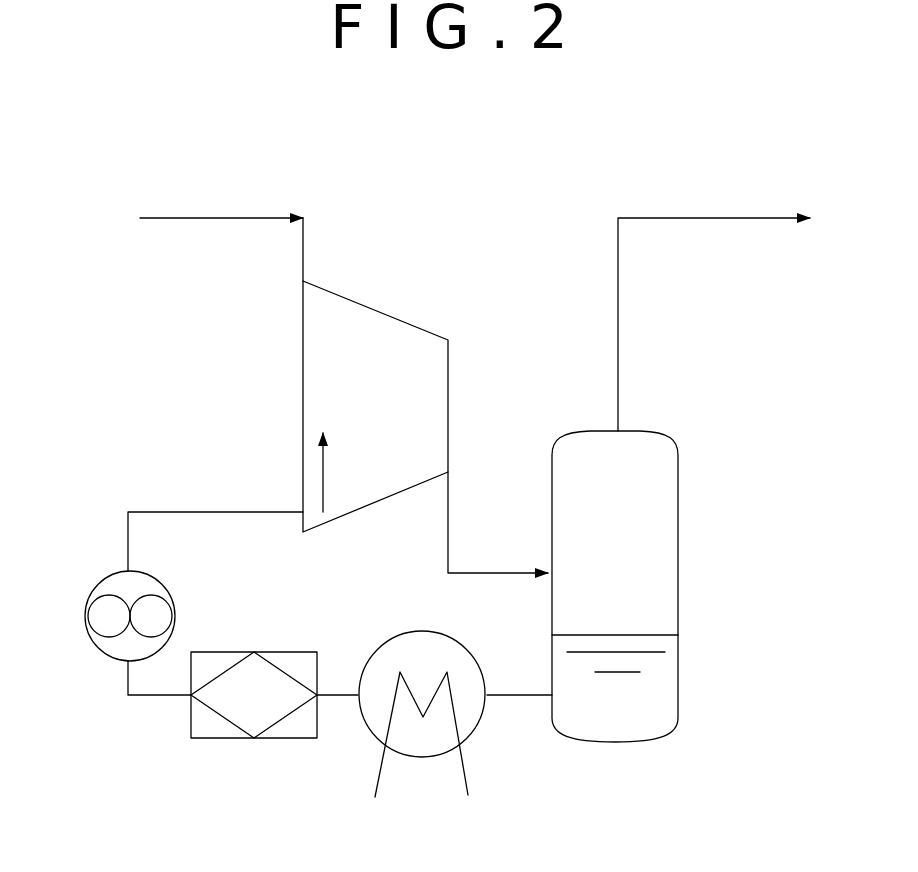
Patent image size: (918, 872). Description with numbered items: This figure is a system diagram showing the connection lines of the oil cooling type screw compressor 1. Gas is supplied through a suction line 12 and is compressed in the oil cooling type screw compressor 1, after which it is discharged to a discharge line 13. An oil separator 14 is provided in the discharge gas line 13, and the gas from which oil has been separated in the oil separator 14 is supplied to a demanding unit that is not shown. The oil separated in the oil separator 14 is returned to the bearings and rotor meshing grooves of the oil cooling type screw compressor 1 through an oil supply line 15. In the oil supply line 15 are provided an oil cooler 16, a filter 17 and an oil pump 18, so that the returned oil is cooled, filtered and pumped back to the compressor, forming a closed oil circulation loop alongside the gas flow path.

The oil cooling type screw compressor 1 is at (362, 302).
The suction line 12 is at (191, 216).
The discharge line 13 is at (618, 271).
The oil separator 14 is at (680, 485).
The oil supply line 15 is at (194, 510).
The oil cooler 16 is at (363, 722).
The filter 17 is at (212, 742).
The oil pump 18 is at (96, 584).